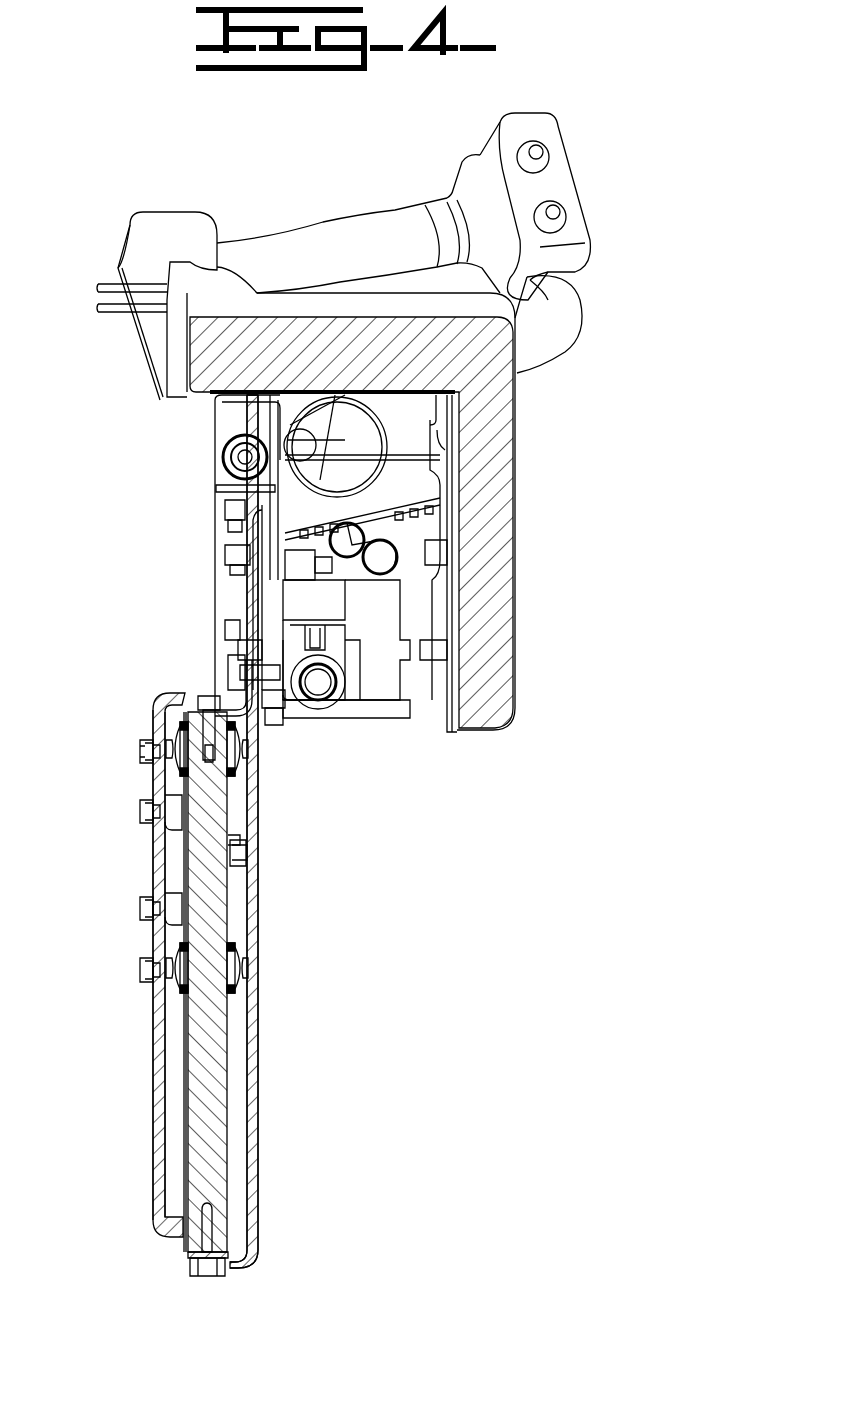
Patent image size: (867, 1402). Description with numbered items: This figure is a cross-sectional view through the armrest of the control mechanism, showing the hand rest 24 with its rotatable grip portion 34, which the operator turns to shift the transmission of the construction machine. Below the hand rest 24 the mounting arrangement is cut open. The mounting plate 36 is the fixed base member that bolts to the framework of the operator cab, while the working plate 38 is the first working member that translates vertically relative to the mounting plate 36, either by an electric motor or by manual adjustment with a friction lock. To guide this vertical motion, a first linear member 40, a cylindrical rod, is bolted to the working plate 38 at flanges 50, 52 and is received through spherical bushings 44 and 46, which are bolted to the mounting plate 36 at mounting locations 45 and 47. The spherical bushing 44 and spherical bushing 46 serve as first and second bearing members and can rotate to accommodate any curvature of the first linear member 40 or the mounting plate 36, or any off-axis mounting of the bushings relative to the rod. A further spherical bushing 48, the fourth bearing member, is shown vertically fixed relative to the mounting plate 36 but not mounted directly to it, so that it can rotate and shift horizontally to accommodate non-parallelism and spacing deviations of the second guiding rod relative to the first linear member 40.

The hand rest 24 is at (562, 353).
The grip portion 34 is at (395, 210).
The mounting plate 36 is at (152, 1130).
The working plate 38 is at (258, 1117).
The first linear member 40 is at (227, 1080).
The spherical bushing 44 is at (187, 733).
The mounting location 45 is at (143, 755).
The spherical bushing 46 is at (182, 953).
The mounting location 47 is at (140, 982).
The spherical bushing 48 is at (250, 853).
The flange 50 is at (240, 708).
The flange 52 is at (230, 1262).